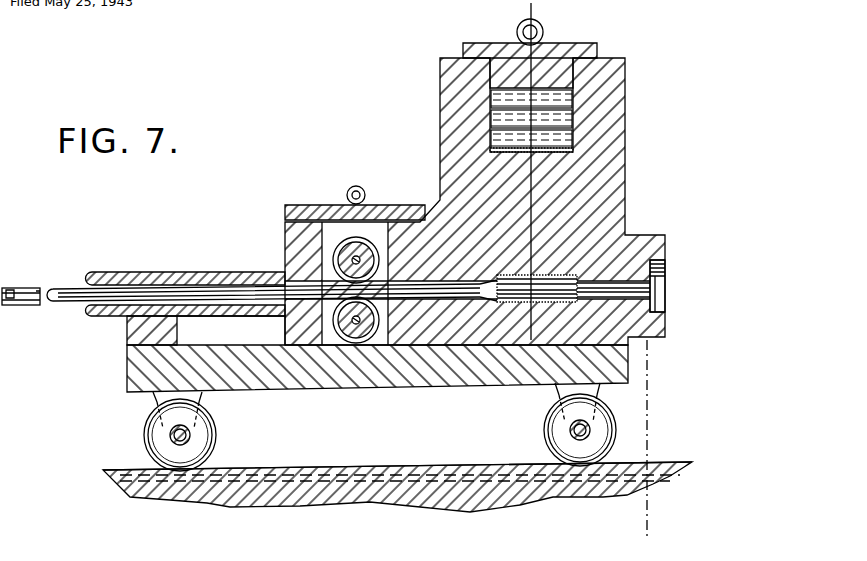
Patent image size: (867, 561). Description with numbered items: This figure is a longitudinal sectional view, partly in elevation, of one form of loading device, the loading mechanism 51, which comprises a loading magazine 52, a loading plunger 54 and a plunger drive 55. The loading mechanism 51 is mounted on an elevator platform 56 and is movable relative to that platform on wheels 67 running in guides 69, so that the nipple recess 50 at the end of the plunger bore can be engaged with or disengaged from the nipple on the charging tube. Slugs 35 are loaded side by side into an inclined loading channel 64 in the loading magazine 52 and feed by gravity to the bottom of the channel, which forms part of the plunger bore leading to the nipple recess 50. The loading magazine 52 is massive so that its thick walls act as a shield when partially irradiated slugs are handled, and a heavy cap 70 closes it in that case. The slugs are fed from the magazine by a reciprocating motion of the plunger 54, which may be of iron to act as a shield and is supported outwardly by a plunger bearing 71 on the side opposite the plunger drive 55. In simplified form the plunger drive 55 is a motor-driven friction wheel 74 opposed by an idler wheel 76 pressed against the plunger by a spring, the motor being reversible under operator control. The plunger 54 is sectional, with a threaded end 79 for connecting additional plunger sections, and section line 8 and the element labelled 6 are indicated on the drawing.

The carriage base 6 is at (647, 339).
The section line 8- 8 is at (512, 12).
The slugs 35 is at (502, 136).
The nipple recess 50 is at (665, 279).
The loading mechanism 51 is at (661, 176).
The loading magazine 52 is at (603, 101).
The loading plunger 54 is at (73, 303).
The plunger drive 55 is at (331, 197).
The elevator platform 56 is at (205, 492).
The loading channel 64 is at (490, 151).
The wheels 67 is at (145, 423).
The guides 69 is at (336, 449).
The heavy cap 70 is at (575, 48).
The plunger bearing 71 is at (216, 243).
The friction wheel 74 is at (352, 240).
The idler wheel 76 is at (357, 332).
The threaded end 79 is at (12, 306).